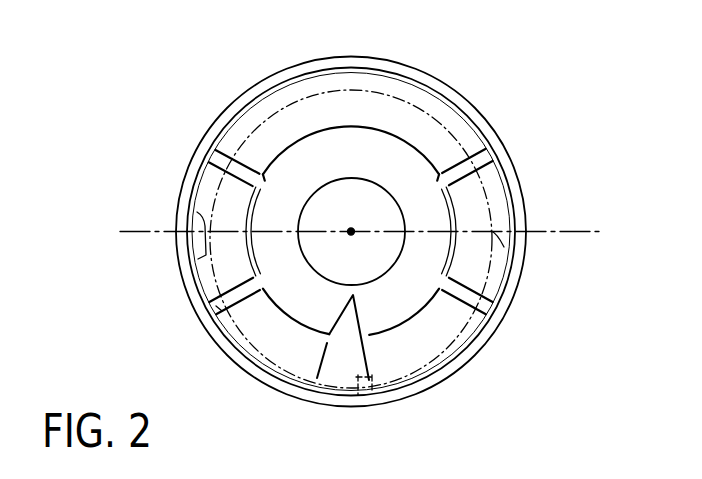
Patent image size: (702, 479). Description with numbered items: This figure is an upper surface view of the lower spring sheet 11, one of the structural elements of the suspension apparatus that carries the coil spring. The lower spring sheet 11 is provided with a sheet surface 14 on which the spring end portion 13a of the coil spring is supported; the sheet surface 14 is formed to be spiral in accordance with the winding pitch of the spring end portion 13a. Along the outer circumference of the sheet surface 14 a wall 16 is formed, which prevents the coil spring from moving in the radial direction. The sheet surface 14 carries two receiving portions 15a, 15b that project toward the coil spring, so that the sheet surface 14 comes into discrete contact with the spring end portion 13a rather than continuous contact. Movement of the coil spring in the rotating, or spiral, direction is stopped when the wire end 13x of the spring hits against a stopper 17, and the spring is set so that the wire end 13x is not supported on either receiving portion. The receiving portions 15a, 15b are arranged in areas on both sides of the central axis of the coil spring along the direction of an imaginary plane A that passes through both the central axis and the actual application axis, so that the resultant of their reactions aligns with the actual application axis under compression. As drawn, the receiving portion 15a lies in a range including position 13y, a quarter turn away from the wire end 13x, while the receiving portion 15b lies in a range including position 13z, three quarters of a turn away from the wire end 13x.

The lower spring sheet 11 is at (180, 96).
The sheet surface 14 is at (327, 100).
The spring end portion 13a is at (410, 96).
The wall 16 is at (468, 108).
The receiving portion 15a is at (497, 177).
The receiving portion 15b is at (210, 288).
The wire end 13x is at (382, 382).
The position 13y is at (518, 252).
The position 13z is at (197, 213).
The stopper 17 is at (340, 378).
The imaginary plane A is at (572, 232).